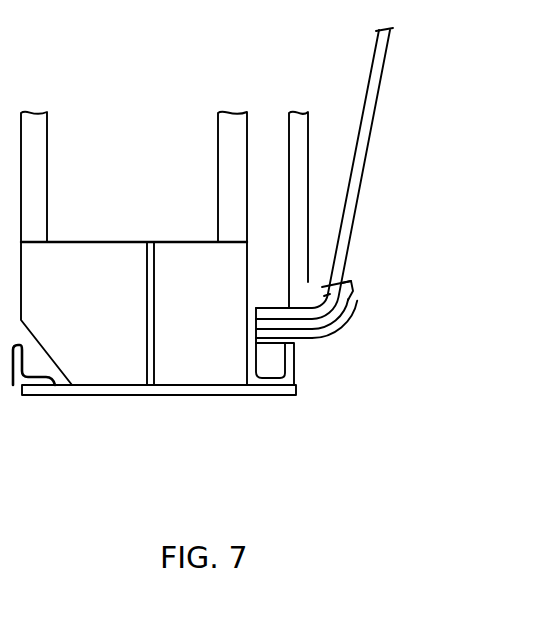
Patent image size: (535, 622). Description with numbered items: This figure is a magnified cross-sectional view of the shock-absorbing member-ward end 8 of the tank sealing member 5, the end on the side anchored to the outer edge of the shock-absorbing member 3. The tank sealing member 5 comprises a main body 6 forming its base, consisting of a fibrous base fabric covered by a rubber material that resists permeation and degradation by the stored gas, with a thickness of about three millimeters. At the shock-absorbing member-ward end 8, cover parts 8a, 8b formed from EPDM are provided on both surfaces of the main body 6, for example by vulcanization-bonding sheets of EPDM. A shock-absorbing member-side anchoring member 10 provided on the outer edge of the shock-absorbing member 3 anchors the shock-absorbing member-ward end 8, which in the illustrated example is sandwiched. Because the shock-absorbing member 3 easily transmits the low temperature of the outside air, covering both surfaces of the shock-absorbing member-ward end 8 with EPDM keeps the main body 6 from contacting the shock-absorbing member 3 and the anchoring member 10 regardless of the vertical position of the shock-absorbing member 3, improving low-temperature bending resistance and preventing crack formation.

The shock-absorbing member 3 is at (130, 401).
The tank sealing member 5 is at (387, 129).
The main body 6 is at (385, 58).
The shock-absorbing member-ward end 8 is at (302, 329).
The cover part 8a is at (322, 330).
The cover part 8b is at (346, 292).
The shock-absorbing member-side anchoring member 10 is at (300, 282).